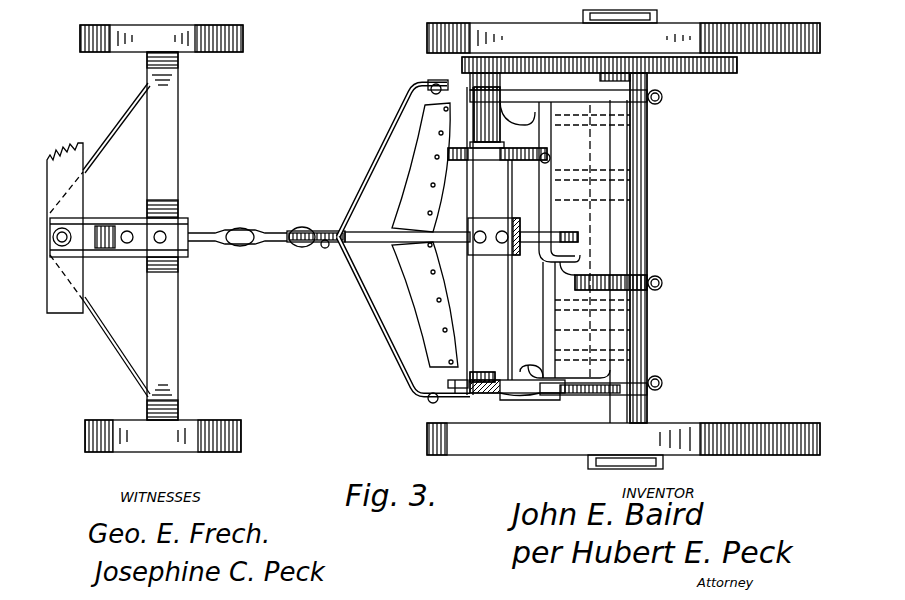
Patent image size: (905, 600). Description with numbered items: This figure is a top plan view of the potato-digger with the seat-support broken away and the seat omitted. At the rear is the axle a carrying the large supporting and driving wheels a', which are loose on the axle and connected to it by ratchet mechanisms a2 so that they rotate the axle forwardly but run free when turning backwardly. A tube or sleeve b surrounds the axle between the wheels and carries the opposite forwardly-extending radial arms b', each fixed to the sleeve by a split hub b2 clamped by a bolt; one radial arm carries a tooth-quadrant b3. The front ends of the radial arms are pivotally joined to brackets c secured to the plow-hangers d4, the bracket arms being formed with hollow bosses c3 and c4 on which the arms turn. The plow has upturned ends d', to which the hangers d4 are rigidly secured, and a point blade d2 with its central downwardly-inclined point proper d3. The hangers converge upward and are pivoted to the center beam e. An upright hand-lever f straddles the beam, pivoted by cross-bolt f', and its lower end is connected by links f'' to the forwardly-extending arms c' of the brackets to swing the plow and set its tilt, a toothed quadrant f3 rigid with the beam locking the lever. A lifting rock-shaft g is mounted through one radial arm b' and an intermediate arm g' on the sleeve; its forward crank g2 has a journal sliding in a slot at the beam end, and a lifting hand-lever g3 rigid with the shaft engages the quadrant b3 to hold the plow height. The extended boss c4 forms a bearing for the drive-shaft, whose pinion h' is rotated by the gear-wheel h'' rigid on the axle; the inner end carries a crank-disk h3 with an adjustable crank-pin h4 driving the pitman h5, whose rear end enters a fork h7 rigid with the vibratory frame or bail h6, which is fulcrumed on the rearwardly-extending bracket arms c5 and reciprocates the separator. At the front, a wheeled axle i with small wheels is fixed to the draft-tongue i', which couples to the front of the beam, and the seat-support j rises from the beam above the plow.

The axle a is at (623, 26).
The supporting and driving wheels a' is at (623, 423).
The ratchet mechanisms a2 is at (672, 472).
The tube or sleeve b is at (647, 248).
The radial arms b' is at (635, 99).
The split hub b2 is at (662, 97).
The tooth-quadrant b3 is at (610, 380).
The brackets c is at (510, 400).
The forwardly-extending arms c' is at (411, 408).
The hollow boss c3 is at (484, 372).
The hollow boss c4 is at (492, 140).
The rearwardly-extending arms c5 is at (555, 84).
The upturned ends of moldboard d' is at (467, 349).
The point blade d2 is at (422, 165).
The point proper d3 is at (405, 245).
The plow-hangers d4 is at (489, 241).
The center beam e is at (362, 233).
The hand-lever f is at (168, 228).
The cross-bolt f' is at (316, 216).
The toothed quadrant f3 is at (320, 247).
The links f'' is at (402, 237).
The lifting rock-shaft g is at (592, 261).
The intermediate arm g' is at (615, 286).
The crank g2 is at (566, 250).
The lifting hand-lever g3 is at (520, 398).
The pinion h' is at (521, 219).
The gear-wheel h'' is at (618, 70).
The crank-disk h3 is at (558, 150).
The crank-pin h4 is at (457, 162).
The pitman h5 is at (592, 185).
The vibratory frame or bail h6 is at (540, 278).
The fork h7 is at (544, 170).
The front wheeled axle i is at (161, 238).
The draft-tongue i' is at (85, 228).
The seat-support j is at (490, 228).